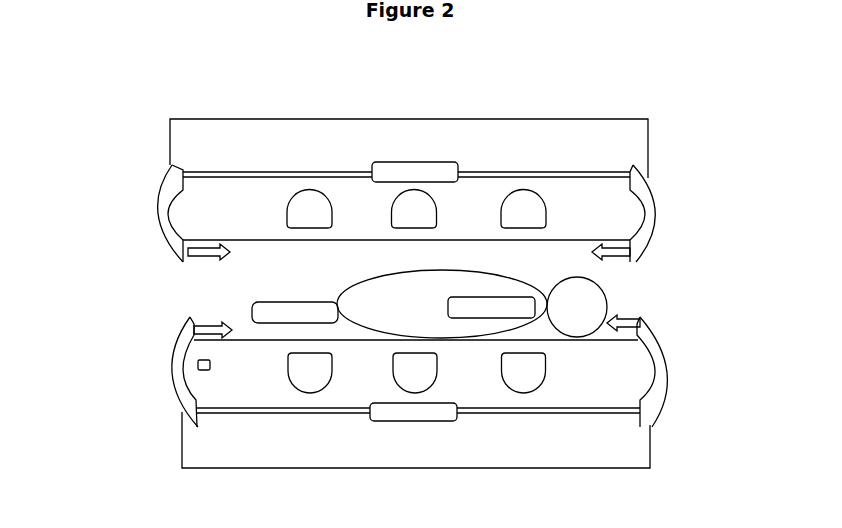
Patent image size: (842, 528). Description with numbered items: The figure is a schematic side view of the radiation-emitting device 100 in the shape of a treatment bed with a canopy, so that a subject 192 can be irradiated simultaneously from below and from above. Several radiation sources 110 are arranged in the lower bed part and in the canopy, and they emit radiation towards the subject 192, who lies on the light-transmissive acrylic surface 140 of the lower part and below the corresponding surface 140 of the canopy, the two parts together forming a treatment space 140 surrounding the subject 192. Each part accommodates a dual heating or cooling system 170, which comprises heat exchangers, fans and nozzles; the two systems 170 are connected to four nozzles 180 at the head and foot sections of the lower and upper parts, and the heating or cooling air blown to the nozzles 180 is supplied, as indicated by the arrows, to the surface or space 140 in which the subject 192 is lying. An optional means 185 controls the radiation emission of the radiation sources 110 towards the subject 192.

The radiation-emitting device 100 is at (142, 107).
The radiation source 110 is at (523, 207).
The space or surface 140 is at (245, 273).
The dual heating or cooling system 170 is at (417, 168).
The nozzle 180 is at (663, 367).
The means configured to control the radiation source's radiation emission 185 is at (198, 366).
The subject 192 is at (587, 296).